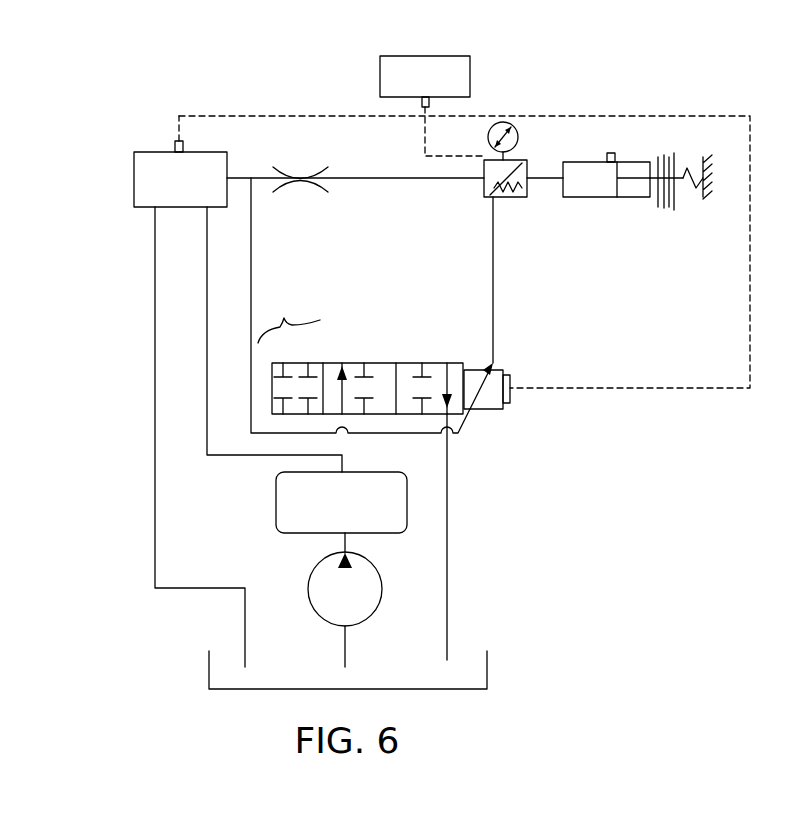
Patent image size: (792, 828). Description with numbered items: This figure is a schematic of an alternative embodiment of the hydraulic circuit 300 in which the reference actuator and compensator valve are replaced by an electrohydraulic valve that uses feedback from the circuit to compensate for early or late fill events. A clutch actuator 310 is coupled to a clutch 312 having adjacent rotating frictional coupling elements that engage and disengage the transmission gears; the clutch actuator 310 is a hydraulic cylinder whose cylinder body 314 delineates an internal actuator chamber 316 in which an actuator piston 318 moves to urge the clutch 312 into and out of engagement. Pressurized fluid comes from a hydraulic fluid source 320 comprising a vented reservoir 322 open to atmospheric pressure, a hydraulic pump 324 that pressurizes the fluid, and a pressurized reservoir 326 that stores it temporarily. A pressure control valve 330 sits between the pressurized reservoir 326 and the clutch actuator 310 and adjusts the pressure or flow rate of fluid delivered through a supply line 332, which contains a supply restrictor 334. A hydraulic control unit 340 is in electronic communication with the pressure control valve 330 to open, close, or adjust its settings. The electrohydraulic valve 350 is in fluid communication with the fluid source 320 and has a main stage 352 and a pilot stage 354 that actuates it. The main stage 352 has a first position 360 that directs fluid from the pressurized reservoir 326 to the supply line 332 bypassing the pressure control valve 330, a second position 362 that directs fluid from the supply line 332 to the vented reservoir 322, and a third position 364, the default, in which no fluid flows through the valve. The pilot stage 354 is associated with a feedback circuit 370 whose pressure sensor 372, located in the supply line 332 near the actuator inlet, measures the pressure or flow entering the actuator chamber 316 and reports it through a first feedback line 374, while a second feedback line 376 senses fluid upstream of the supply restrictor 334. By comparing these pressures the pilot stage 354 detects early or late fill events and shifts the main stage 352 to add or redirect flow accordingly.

The hydraulic circuit 300 is at (612, 518).
The clutch actuator 310 is at (617, 142).
The clutch 312 is at (675, 155).
The cylinder body 314 is at (633, 198).
The actuator chamber 316 is at (592, 190).
The actuator piston 318 is at (618, 170).
The hydraulic fluid source 320 is at (482, 584).
The vented reservoir 322 is at (488, 670).
The hydraulic pump 324 is at (382, 580).
The pressurized reservoir 326 is at (276, 503).
The pressure control valve 330 is at (133, 180).
The supply line 332 is at (378, 176).
The supply restrictor 334 is at (322, 167).
The hydraulic control unit 340 is at (380, 78).
The electrohydraulic valve 350 is at (392, 304).
The main stage 352 is at (287, 317).
The pilot stage 354 is at (488, 410).
The first position 360 is at (353, 362).
The second position 362 is at (413, 362).
The third position 364 is at (300, 362).
The feedback circuit 370 is at (530, 367).
The pressure sensor 372 is at (528, 167).
The first feedback line 374 is at (493, 278).
The second feedback line 376 is at (252, 263).